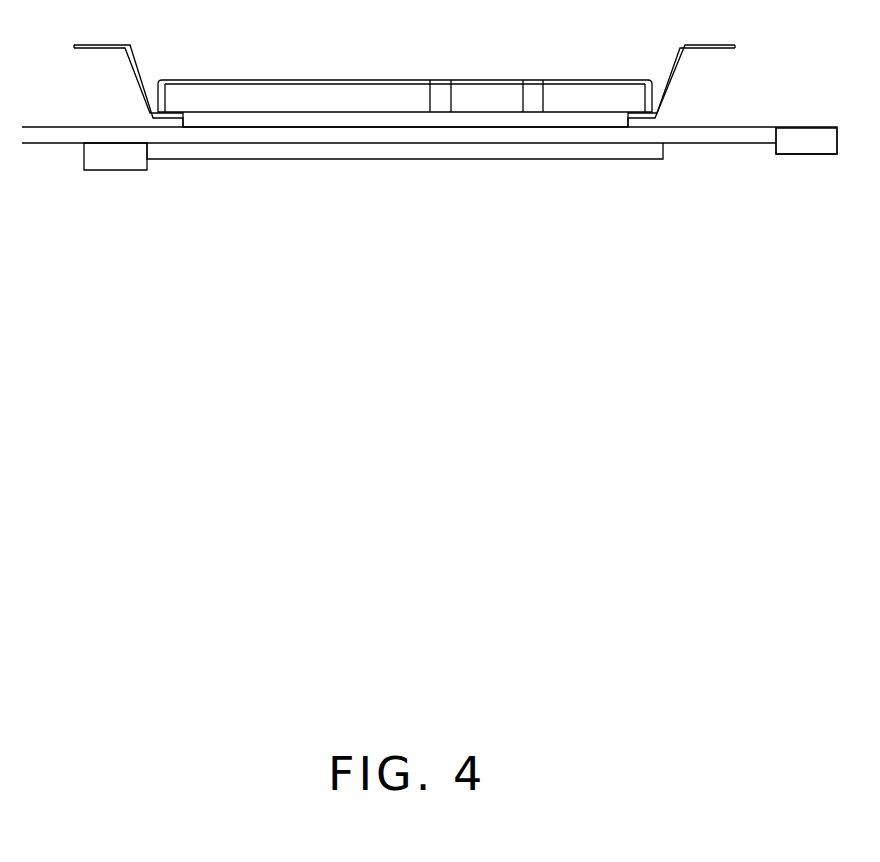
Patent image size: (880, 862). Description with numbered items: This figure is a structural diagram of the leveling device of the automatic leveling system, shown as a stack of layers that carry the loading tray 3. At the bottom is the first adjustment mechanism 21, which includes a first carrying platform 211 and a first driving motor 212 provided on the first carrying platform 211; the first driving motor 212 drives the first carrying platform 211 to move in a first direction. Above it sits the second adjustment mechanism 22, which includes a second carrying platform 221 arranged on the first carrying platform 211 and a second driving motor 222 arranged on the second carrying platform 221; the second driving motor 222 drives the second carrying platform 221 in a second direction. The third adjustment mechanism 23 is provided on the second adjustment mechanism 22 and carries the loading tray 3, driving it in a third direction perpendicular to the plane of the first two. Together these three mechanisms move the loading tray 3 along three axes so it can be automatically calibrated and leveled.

The loading tray 3 is at (272, 100).
The third adjustment mechanism 23 is at (395, 120).
The first adjustment mechanism 21 is at (364, 223).
The first carrying platform 211 is at (242, 148).
The first driving motor 212 is at (112, 196).
The second adjustment mechanism 22 is at (429, 212).
The second carrying platform 221 is at (700, 133).
The second driving motor 222 is at (798, 186).